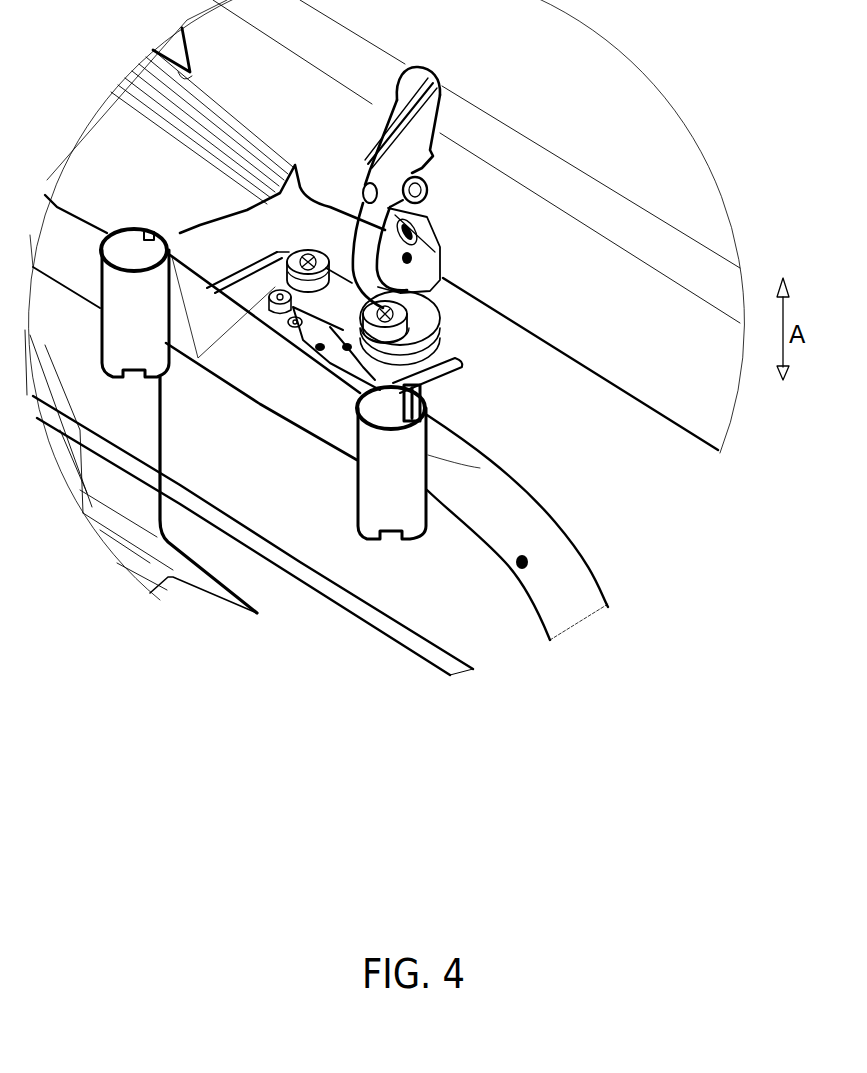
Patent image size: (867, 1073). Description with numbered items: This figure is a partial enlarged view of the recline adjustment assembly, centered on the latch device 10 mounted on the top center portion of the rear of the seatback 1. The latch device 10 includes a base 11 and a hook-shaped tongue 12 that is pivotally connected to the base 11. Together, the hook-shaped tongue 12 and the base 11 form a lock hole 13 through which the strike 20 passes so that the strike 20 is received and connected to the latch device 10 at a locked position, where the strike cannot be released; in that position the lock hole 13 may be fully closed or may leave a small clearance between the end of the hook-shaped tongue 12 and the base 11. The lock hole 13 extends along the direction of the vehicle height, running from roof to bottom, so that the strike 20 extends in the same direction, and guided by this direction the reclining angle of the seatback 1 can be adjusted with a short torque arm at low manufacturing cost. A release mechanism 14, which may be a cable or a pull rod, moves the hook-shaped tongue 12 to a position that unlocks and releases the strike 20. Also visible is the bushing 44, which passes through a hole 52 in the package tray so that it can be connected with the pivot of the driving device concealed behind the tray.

The seatback 1 is at (50, 198).
The latch device 10 is at (440, 303).
The base 11 is at (342, 262).
The hook-shaped tongue 12 is at (462, 363).
The lock hole 13 is at (440, 285).
The release mechanism 14 is at (281, 333).
The strike 20 is at (363, 213).
The bushing 44 is at (440, 103).
The hole 52 is at (418, 72).